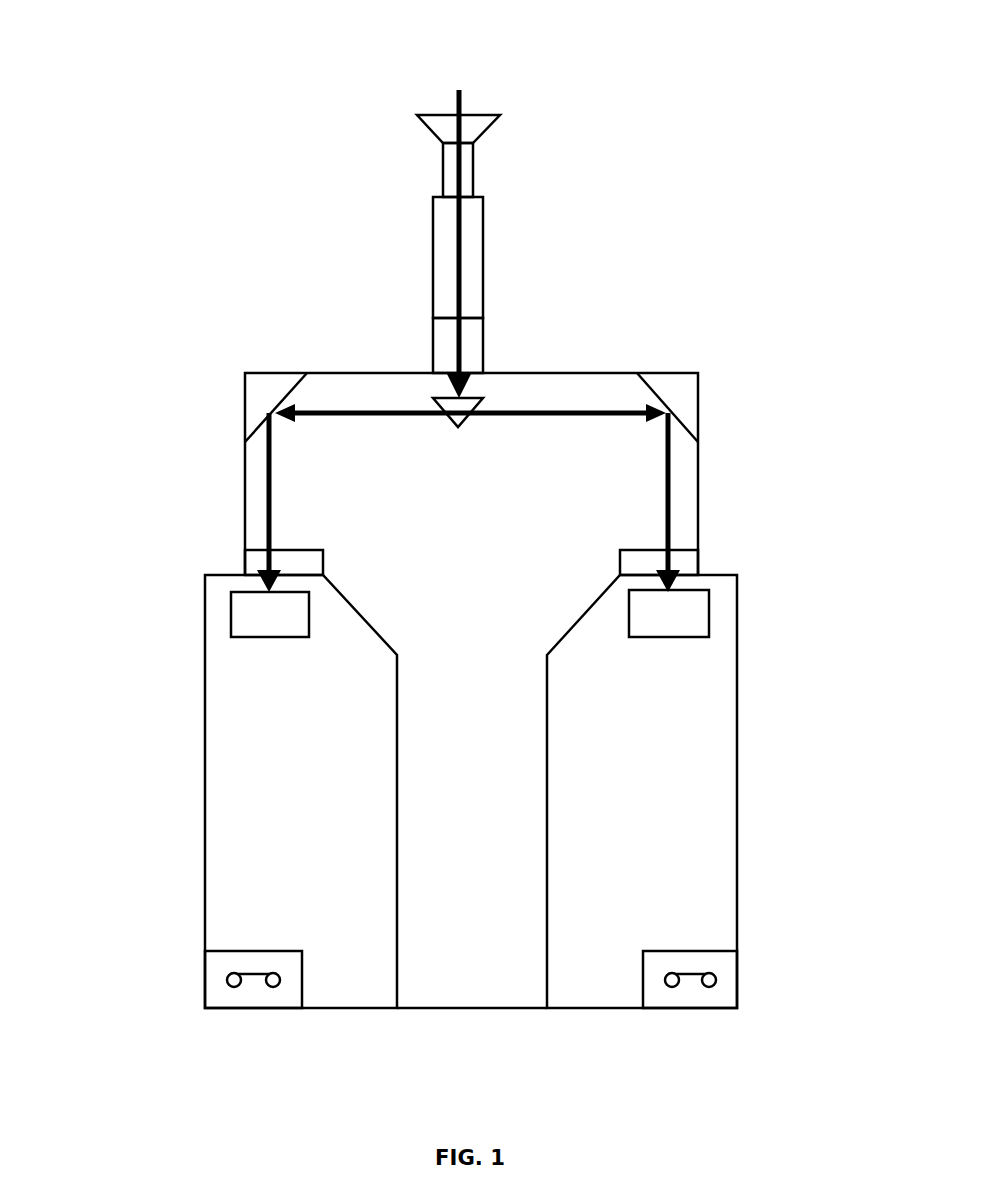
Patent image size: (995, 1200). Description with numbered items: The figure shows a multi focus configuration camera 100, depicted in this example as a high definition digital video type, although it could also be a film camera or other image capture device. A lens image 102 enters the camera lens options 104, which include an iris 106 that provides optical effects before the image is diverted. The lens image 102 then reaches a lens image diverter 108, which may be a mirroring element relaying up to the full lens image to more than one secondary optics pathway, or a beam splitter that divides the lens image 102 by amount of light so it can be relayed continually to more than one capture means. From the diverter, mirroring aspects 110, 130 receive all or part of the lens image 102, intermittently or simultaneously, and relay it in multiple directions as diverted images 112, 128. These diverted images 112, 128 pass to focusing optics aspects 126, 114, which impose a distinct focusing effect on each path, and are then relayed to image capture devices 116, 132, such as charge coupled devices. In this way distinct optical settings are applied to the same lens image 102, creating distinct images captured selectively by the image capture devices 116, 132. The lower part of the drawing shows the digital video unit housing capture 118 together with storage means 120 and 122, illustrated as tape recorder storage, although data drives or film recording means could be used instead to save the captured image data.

The multi focus configuration camera 100 is at (300, 212).
The lens image 102 is at (465, 83).
The camera lens options 104 is at (478, 212).
The iris 106 is at (482, 360).
The lens image diverter 108 is at (495, 390).
The mirroring aspect 110 is at (682, 387).
The diverted image 112 is at (682, 475).
The focusing optics aspect 114 is at (687, 560).
The image capture device 116 is at (695, 615).
The digital video unit housing capture 118 is at (700, 790).
The storage means 120 is at (665, 1003).
The storage means 122 is at (257, 1003).
The focusing optics aspect 126 is at (253, 556).
The diverted image 128 is at (253, 490).
The mirroring aspect 130 is at (253, 403).
The image capture device 132 is at (243, 625).